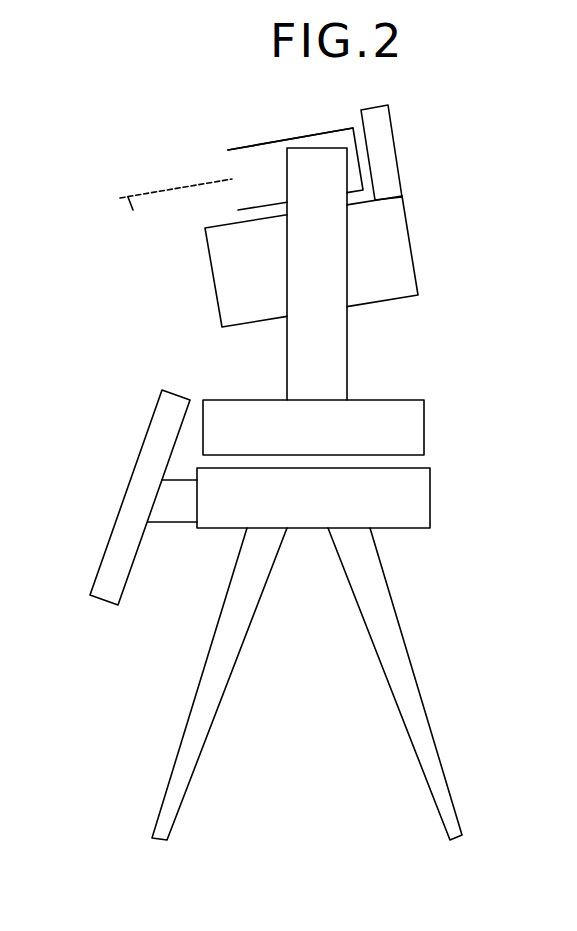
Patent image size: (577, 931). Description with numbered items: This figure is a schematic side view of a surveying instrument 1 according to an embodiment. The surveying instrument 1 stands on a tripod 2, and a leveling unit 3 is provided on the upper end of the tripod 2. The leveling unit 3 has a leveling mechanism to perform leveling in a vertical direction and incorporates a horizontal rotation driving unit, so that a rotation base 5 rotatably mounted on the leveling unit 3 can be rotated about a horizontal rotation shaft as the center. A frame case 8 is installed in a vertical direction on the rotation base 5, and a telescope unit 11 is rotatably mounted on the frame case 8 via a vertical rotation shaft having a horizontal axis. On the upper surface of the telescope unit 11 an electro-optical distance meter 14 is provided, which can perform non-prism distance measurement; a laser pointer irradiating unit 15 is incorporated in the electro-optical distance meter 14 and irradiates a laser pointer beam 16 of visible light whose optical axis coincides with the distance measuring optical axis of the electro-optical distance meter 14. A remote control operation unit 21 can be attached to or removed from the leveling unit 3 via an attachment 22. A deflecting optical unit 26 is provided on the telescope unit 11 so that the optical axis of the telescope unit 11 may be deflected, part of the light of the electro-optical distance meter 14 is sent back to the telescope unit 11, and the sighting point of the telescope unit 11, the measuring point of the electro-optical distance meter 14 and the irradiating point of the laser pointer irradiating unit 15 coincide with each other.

The surveying instrument 1 is at (228, 113).
The tripod 2 is at (410, 660).
The leveling unit 3 is at (430, 505).
The rotation base 5 is at (424, 432).
The frame case 8 is at (347, 350).
The telescope unit 11 is at (413, 257).
The electro-optical distance meter 14 is at (358, 157).
The laser pointer irradiating unit 15 is at (290, 139).
The laser pointer beam 16 is at (133, 210).
The remote control operation unit 21 is at (150, 421).
The attachment 22 is at (167, 523).
The deflecting optical unit 26 is at (393, 129).